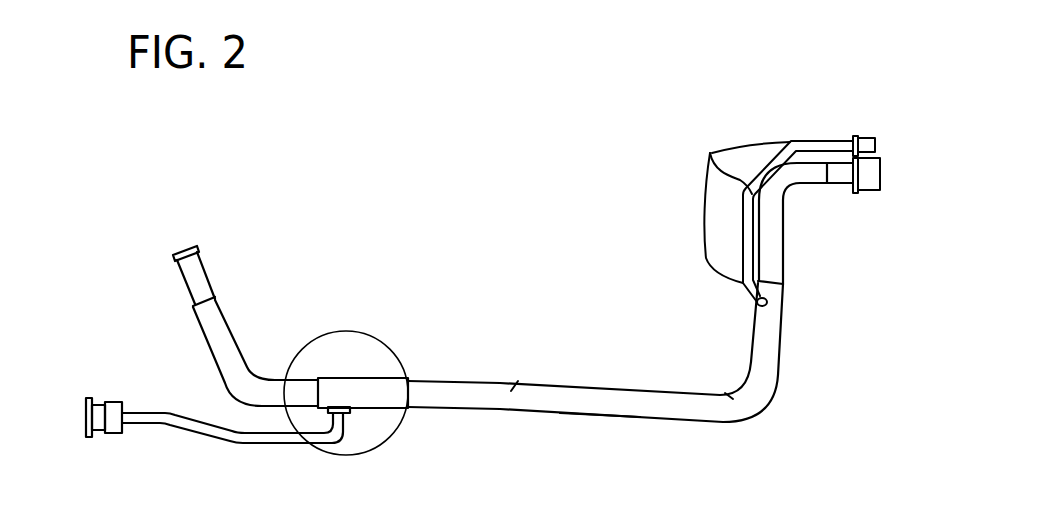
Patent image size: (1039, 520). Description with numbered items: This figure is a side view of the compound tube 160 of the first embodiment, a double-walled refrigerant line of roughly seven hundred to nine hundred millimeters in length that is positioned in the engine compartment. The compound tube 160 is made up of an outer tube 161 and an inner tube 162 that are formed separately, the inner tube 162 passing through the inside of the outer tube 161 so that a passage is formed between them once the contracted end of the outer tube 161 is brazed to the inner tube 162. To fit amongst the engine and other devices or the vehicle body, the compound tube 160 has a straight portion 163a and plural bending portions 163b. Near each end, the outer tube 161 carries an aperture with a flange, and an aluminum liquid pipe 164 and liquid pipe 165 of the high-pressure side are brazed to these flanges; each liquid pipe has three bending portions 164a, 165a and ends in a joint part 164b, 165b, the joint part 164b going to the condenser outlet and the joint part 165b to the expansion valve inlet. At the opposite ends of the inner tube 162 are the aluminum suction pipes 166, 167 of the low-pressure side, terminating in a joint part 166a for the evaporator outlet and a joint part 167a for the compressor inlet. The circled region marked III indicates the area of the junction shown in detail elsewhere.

The compound tube 160 is at (448, 381).
The outer tube 161 is at (383, 388).
The inner tube 162 is at (300, 388).
The straight portion 163a is at (595, 403).
The bending portions 163b is at (720, 392).
The liquid pipe 164 is at (143, 417).
The bending portions 164a is at (331, 441).
The joint part 164b is at (97, 424).
The liquid pipe 165 is at (838, 141).
The bending portions 165a is at (712, 154).
The joint part 165b is at (873, 146).
The suction pipe 166 is at (842, 178).
The joint part 166a is at (870, 189).
The suction pipe 167 is at (188, 289).
The joint part 167a is at (173, 257).
The detail region III is at (445, 455).